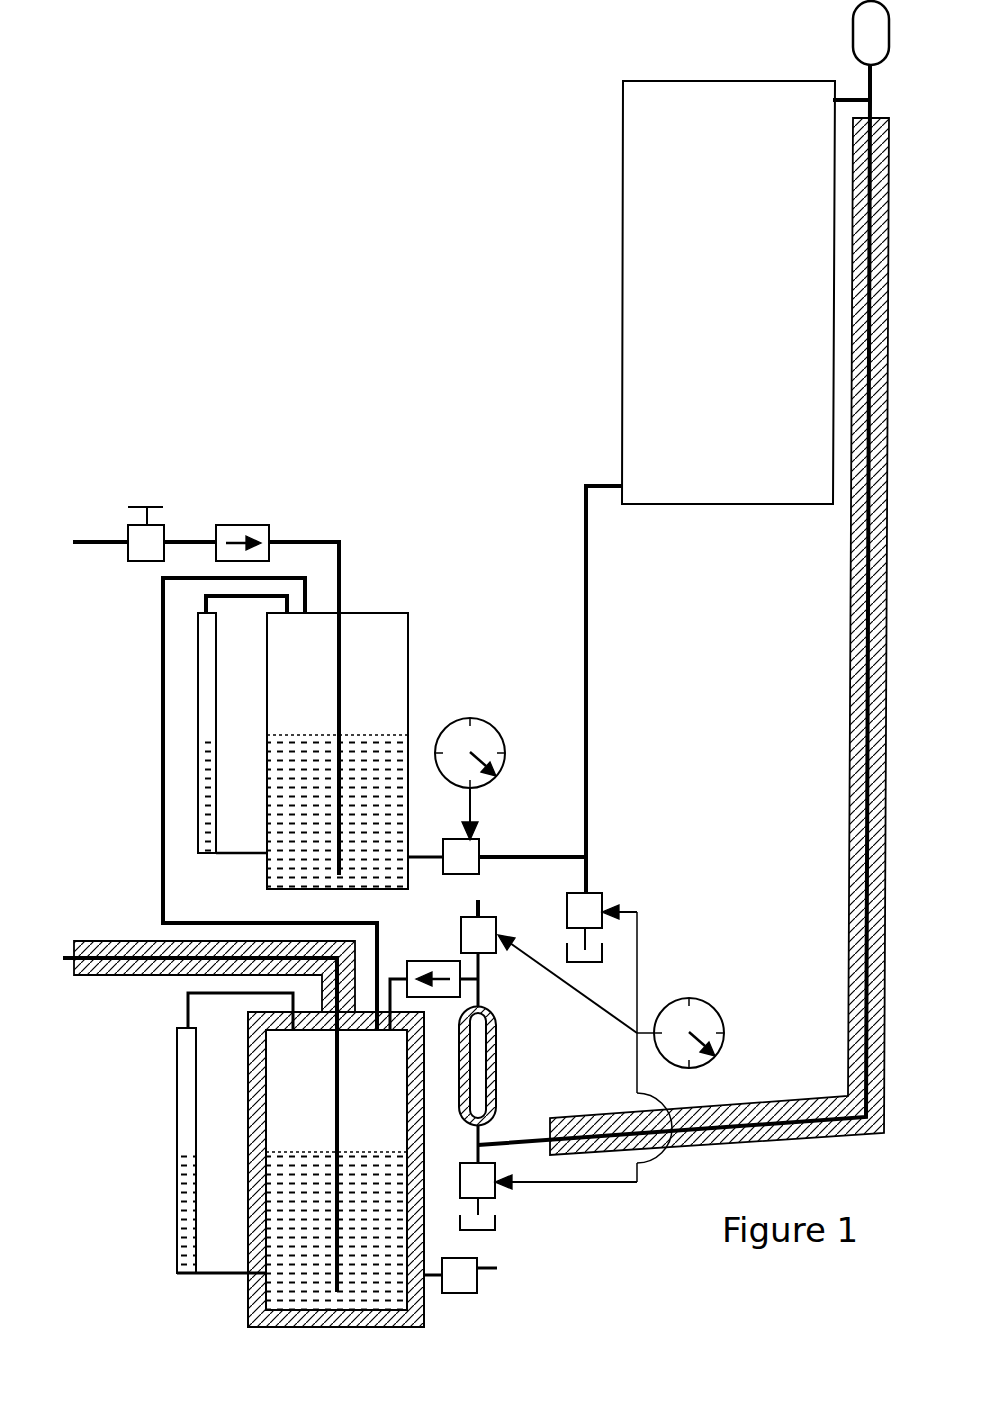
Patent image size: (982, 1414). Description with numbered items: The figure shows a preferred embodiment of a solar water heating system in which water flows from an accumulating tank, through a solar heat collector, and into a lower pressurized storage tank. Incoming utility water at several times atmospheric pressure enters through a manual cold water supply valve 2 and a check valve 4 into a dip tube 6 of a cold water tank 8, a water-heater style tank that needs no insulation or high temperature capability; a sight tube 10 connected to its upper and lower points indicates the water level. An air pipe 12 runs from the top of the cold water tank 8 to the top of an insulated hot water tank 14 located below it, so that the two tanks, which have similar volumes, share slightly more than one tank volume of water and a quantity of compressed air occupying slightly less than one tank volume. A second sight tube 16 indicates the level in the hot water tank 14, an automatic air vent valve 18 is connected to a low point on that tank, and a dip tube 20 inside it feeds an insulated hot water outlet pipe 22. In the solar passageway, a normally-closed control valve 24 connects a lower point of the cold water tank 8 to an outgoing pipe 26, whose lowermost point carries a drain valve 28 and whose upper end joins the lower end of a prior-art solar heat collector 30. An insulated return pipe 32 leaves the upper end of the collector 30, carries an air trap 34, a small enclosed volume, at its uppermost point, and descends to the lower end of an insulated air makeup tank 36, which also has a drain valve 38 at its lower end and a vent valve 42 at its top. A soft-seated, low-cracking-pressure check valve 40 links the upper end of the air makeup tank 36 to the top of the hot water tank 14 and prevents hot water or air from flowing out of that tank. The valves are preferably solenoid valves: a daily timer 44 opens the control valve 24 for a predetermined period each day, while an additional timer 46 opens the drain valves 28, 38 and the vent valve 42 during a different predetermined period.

The manual cold water supply valve 2 is at (128, 528).
The check valve 4 is at (255, 525).
The dip tube 6 is at (337, 663).
The cold water tank 8 is at (408, 622).
The sight tube 10 is at (216, 682).
The air pipe 12 is at (162, 818).
The insulated hot water tank 14 is at (247, 1310).
The sight tube 16 is at (196, 1098).
The automatic air vent valve 18 is at (468, 1293).
The dip tube 20 is at (337, 1112).
The insulated hot water outlet pipe 22 is at (128, 940).
The control valve 24 is at (478, 839).
The outgoing pipe 26 is at (586, 703).
The drain valve 28 is at (603, 893).
The solar heat collector 30 is at (622, 320).
The insulated return pipe 32 is at (848, 820).
The air trap 34 is at (852, 30).
The insulated air makeup tank 36 is at (496, 1067).
The drain valve 38 is at (495, 1198).
The check valve 40 is at (430, 958).
The vent valve 42 is at (495, 913).
The timer 44 is at (480, 717).
The additional timer 46 is at (725, 1025).